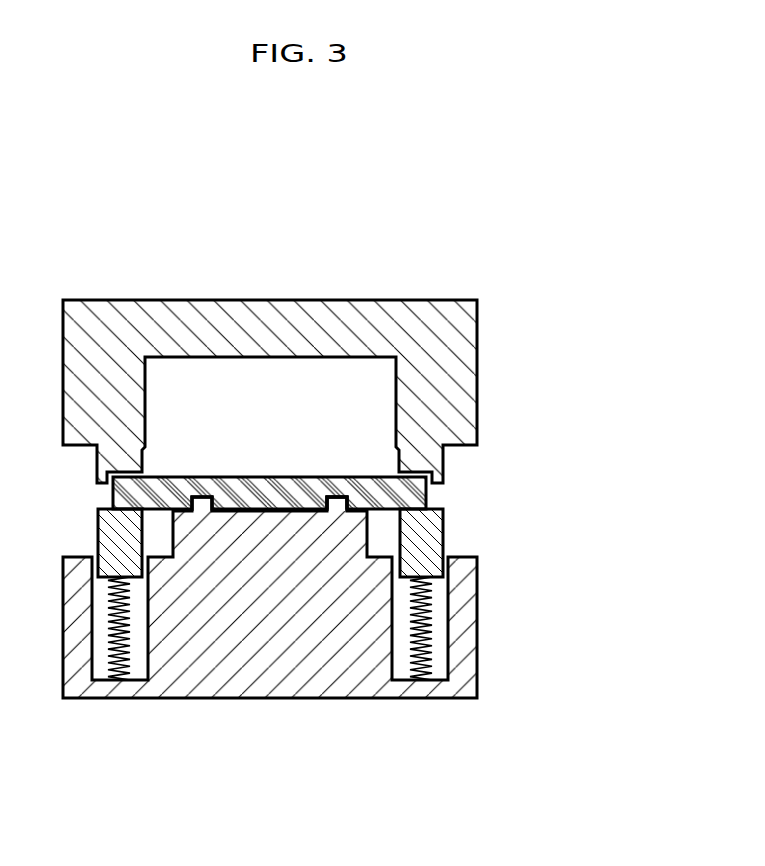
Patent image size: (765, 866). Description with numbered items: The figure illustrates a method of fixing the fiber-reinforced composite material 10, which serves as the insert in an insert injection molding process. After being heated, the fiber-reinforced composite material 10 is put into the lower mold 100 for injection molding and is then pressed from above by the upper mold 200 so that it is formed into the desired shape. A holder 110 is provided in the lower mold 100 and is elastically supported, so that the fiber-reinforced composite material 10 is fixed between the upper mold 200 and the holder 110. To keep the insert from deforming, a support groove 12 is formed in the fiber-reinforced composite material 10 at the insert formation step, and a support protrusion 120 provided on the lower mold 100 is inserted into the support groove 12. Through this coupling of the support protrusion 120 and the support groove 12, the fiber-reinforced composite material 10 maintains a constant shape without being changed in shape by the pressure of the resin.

The upper mold 200 is at (317, 391).
The lower mold 100 is at (317, 597).
The fiber-reinforced composite material 10 is at (335, 493).
The support groove 12 is at (337, 371).
The holder 110 is at (335, 543).
The support protrusion 120 is at (266, 648).